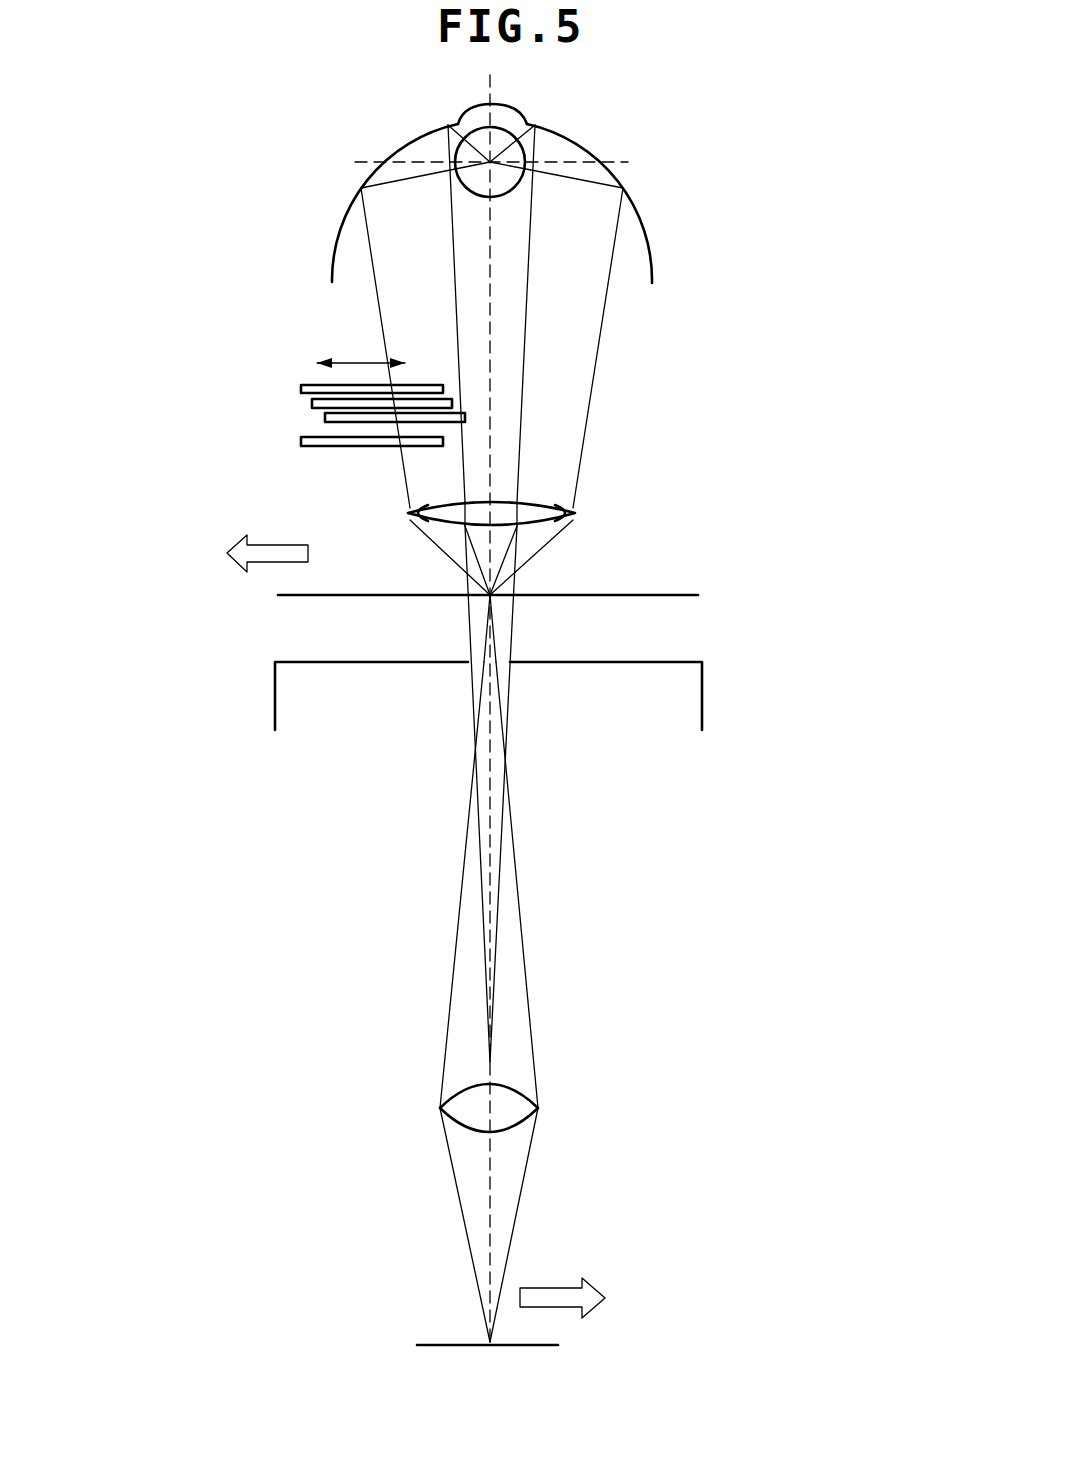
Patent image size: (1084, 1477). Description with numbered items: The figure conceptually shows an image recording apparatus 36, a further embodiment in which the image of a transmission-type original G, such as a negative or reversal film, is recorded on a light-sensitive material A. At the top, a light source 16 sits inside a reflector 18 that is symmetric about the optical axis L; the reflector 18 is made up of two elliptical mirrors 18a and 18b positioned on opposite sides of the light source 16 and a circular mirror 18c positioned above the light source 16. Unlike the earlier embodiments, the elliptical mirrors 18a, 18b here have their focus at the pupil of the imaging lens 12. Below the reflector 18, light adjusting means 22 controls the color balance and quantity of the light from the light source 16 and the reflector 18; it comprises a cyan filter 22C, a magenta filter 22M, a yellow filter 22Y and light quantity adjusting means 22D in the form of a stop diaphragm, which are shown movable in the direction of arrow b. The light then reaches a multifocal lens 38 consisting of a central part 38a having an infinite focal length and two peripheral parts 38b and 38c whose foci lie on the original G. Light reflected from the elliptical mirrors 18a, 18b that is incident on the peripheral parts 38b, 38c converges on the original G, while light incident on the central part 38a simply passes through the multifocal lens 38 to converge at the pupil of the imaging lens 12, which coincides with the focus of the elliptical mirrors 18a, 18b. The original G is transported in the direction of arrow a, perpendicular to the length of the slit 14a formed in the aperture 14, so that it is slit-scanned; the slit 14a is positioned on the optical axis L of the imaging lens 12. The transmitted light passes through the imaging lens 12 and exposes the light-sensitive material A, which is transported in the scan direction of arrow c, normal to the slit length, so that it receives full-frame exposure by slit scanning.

The imaging lens 12 is at (537, 1108).
The aperture 14 is at (488, 698).
The slit 14a is at (463, 675).
The light source 16 is at (508, 198).
The reflector 18 is at (555, 167).
The elliptical mirror 18a is at (652, 250).
The elliptical mirror 18b is at (393, 148).
The circular mirror 18c is at (527, 118).
The light adjusting means 22 is at (297, 383).
The cyan filter 22C is at (301, 389).
The magenta filter 22M is at (312, 403).
The yellow filter 22Y is at (325, 417).
The light quantity adjusting means 22D is at (333, 449).
The image recording apparatus 36 is at (602, 360).
The multifocal lens 38 is at (544, 515).
The central part 38a is at (502, 495).
The peripheral part 38b is at (575, 513).
The peripheral part 38c is at (408, 513).
The original G is at (647, 598).
The optical axis L is at (488, 1162).
The light-sensitive material A is at (430, 1343).
The transport direction of original a is at (288, 543).
The direction b is at (347, 362).
The scan direction of light-sensitive material c is at (540, 1288).